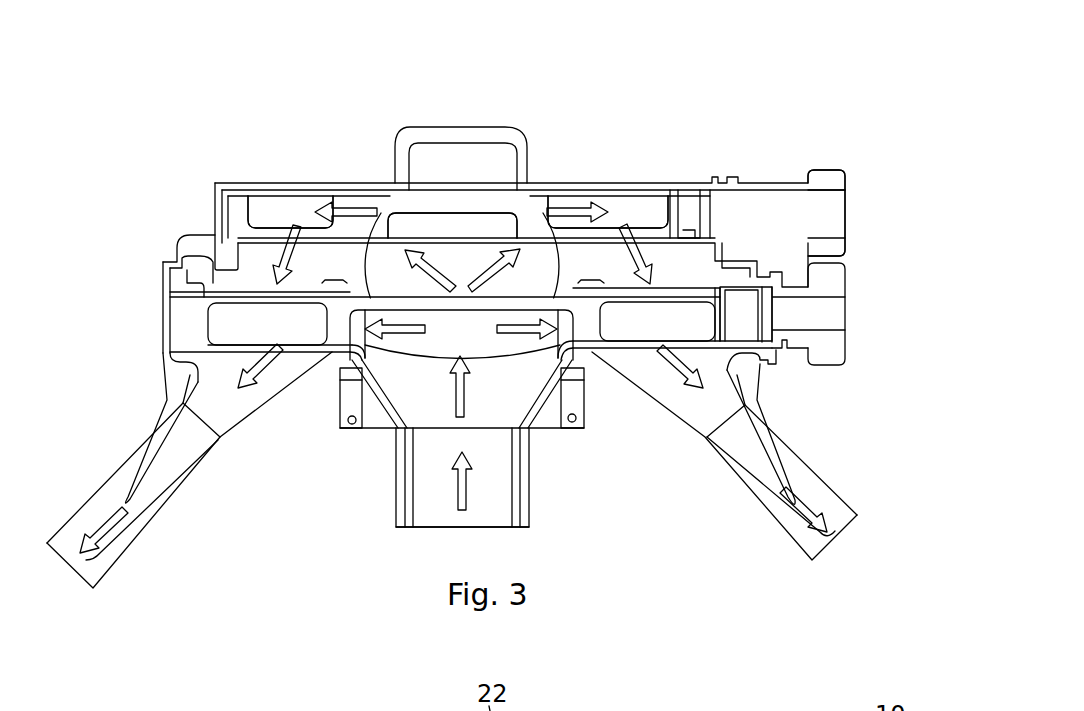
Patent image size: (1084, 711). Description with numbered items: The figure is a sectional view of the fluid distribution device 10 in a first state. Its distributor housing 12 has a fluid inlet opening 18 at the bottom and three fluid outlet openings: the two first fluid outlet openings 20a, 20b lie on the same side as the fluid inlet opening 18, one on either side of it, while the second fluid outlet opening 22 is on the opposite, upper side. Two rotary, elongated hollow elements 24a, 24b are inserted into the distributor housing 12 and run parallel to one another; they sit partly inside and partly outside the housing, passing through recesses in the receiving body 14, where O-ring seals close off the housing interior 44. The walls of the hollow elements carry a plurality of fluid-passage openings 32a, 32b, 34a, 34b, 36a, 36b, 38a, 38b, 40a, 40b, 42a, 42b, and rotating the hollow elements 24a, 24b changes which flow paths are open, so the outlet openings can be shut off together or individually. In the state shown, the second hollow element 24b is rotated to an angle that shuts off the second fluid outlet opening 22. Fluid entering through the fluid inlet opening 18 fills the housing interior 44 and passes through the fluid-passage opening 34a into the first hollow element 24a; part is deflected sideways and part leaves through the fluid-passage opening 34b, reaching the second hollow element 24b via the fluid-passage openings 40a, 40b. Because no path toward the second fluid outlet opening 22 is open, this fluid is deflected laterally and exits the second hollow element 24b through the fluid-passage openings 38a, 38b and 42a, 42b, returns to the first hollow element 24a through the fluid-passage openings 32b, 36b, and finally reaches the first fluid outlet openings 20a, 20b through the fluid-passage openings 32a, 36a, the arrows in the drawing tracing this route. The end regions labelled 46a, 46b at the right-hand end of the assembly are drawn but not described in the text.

The fluid distribution device 10 is at (784, 83).
The distributor housing 12 is at (190, 207).
The receiving body 14 is at (332, 185).
The fluid inlet opening 18 is at (485, 528).
The first fluid outlet opening 20a is at (68, 574).
The first fluid outlet opening 20b is at (838, 549).
The second fluid outlet opening 22 is at (467, 112).
The first elongated hollow element 24a is at (585, 335).
The second elongated hollow element 24b is at (570, 227).
The fluid-passage opening 32a is at (227, 340).
The fluid-passage opening 32b is at (181, 266).
The fluid-passage opening 34a is at (437, 343).
The fluid-passage opening 34b is at (393, 288).
The fluid-passage opening 36a is at (640, 330).
The fluid-passage opening 36b is at (692, 290).
The fluid-passage opening 38a is at (275, 210).
The fluid-passage opening 38b is at (275, 159).
The fluid-passage opening 40a is at (522, 227).
The fluid-passage opening 40b is at (502, 154).
The fluid-passage opening 42a is at (640, 205).
The fluid-passage opening 42b is at (638, 161).
The housing interior 44 is at (492, 430).
The lower right end block 46a is at (832, 352).
The upper right end block 46b is at (823, 182).